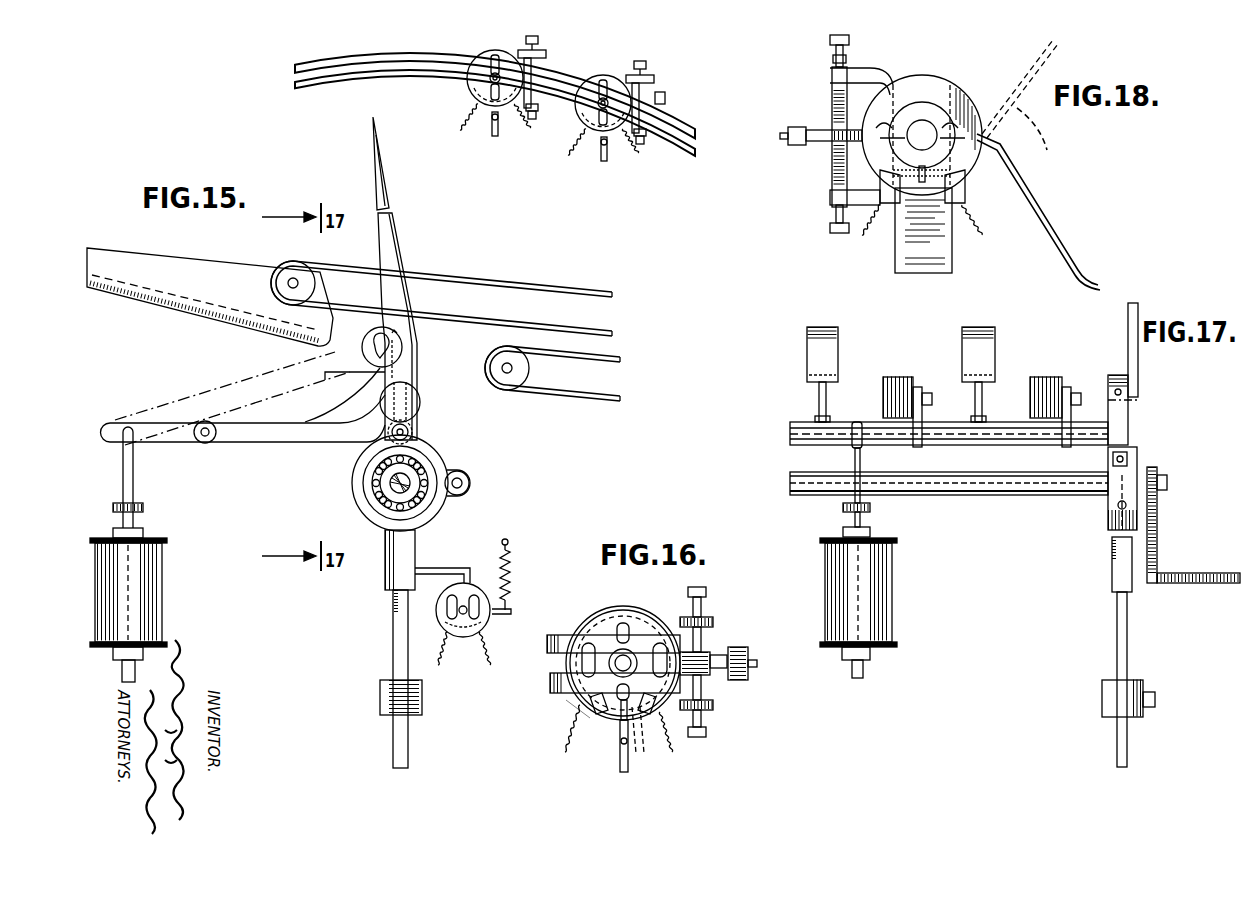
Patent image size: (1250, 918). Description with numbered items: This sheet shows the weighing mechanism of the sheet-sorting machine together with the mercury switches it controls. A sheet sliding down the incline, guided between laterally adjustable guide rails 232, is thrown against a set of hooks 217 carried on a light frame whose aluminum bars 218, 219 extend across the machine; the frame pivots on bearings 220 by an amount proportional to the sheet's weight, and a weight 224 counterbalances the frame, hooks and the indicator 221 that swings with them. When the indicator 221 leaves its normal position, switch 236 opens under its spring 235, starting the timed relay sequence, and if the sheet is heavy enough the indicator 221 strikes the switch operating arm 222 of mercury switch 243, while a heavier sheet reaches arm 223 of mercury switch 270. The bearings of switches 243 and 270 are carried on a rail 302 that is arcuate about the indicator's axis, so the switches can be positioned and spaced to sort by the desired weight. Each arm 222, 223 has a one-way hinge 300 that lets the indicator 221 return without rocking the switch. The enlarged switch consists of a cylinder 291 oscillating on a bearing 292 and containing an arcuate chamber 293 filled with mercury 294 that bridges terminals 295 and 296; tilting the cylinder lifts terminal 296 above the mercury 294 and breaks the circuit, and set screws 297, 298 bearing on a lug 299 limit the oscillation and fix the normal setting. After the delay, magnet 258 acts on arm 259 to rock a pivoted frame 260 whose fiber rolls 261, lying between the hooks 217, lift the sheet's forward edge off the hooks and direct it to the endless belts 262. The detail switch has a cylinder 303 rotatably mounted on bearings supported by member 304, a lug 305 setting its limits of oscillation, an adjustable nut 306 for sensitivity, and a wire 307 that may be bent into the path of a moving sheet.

In FIG. 15, the hooks 217 is at (405, 349).
In FIG. 17, the hooks 217 is at (807, 357).
In FIG. 15, the aluminum bar 218 is at (410, 433).
In FIG. 17, the aluminum bar 218 is at (1088, 430).
In FIG. 15, the aluminum bar 219 is at (470, 486).
In FIG. 17, the aluminum bar 219 is at (1017, 496).
In FIG. 15, the bearings 220 is at (407, 489).
In FIG. 17, the bearings 220 is at (1110, 512).
In FIG. 15, the indicator 221 is at (392, 250).
In FIG. 17, the indicator 221 is at (1128, 337).
In FIG. 15, the switch operating arm 222 is at (493, 128).
In FIG. 16, the switch operating arm 222 is at (621, 760).
In FIG. 15, the switch operating arm 223 is at (602, 153).
In FIG. 15, the weight 224 is at (422, 708).
In FIG. 17, the weight 224 is at (1102, 703).
In FIG. 15, the guide rails 232 is at (242, 297).
In FIG. 15, the spring 235 is at (509, 577).
In FIG. 15, the switch 236 is at (464, 637).
In FIG. 15, the mercury switch 243 is at (468, 91).
In FIG. 16, the mercury switch 243 is at (575, 704).
In FIG. 15, the magnet 258 is at (162, 606).
In FIG. 17, the magnet 258 is at (893, 624).
In FIG. 15, the arm 259 is at (147, 509).
In FIG. 17, the arm 259 is at (868, 508).
In FIG. 15, the pivoted frame 260 is at (273, 437).
In FIG. 17, the pivoted frame 260 is at (862, 447).
In FIG. 15, the fiber rolls 261 is at (421, 402).
In FIG. 17, the fiber rolls 261 is at (897, 380).
In FIG. 15, the endless belts 262 is at (614, 352).
In FIG. 15, the mercury switch 270 is at (612, 80).
In FIG. 16, the cylinder 291 is at (635, 608).
In FIG. 16, the bearing 292 is at (619, 656).
In FIG. 16, the arcuate chamber 293 is at (588, 664).
In FIG. 16, the mercury 294 is at (638, 728).
In FIG. 16, the terminal 295 is at (595, 717).
In FIG. 16, the terminal 296 is at (664, 717).
In FIG. 16, the set screw 297 is at (708, 720).
In FIG. 16, the set screw 298 is at (706, 612).
In FIG. 16, the lug 299 is at (713, 672).
In FIG. 16, the one-way hinge 300 is at (627, 752).
In FIG. 15, the rail 302 is at (688, 151).
In FIG. 16, the rail 302 is at (646, 640).
In FIG. 18, the cylinder 303 is at (945, 92).
In FIG. 18, the member 304 is at (944, 250).
In FIG. 18, the lug 305 is at (830, 133).
In FIG. 18, the adjustable nut 306 is at (795, 147).
In FIG. 18, the wire 307 is at (1013, 156).